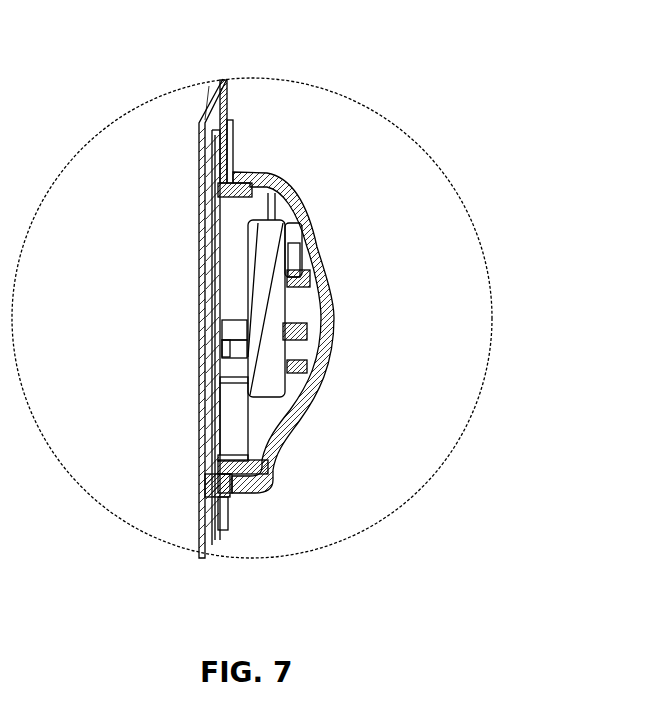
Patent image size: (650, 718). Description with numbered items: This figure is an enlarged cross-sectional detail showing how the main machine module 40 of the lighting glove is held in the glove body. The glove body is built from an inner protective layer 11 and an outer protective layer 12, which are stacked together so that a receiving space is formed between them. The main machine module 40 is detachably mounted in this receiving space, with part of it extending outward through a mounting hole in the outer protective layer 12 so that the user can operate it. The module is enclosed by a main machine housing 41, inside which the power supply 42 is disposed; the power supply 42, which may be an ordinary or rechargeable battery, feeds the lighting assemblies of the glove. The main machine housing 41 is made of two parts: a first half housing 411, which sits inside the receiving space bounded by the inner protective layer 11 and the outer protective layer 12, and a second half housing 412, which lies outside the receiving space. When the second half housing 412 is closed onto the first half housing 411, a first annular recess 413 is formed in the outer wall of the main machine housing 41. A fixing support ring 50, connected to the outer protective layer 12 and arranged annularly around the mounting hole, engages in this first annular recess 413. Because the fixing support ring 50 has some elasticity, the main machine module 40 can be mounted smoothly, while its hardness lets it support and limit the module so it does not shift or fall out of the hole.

The inner protective layer 11 is at (203, 115).
The outer protective layer 12 is at (227, 107).
The main machine module 40 is at (388, 392).
The main machine housing 41 is at (332, 392).
The first half housing 411 is at (273, 473).
The second half housing 412 is at (290, 420).
The first annular recess 413 is at (232, 482).
The power supply 42 is at (265, 335).
The fixing support ring 50 is at (197, 523).